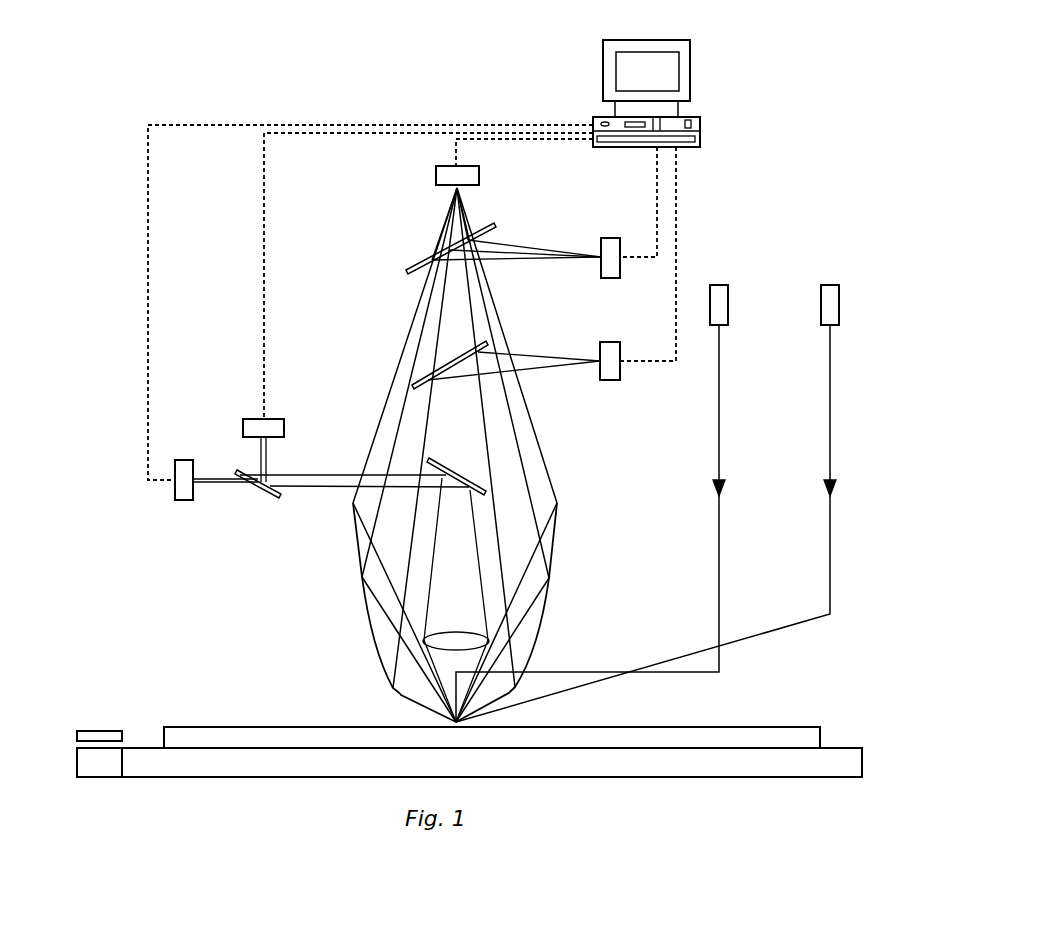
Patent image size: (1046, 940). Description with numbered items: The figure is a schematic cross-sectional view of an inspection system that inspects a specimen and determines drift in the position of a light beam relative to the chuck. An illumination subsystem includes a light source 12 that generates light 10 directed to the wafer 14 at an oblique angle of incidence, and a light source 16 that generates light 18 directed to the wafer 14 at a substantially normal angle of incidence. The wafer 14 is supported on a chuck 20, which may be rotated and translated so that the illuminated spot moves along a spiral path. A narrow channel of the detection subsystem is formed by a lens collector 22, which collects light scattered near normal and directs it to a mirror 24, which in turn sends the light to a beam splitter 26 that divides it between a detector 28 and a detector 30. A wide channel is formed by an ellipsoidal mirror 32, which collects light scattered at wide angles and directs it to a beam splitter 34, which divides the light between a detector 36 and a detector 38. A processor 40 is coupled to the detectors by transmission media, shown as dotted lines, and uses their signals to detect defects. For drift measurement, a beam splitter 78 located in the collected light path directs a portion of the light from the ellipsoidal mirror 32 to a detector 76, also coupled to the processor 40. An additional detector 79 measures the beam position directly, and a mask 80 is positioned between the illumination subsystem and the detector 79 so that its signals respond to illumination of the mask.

The light 10 is at (830, 440).
The light source 12 is at (839, 300).
The wafer 14 is at (818, 727).
The light source 16 is at (728, 300).
The light 18 is at (719, 440).
The chuck 20 is at (864, 770).
The lens collector 22 is at (440, 636).
The mirror 24 is at (440, 466).
The beam splitter 26 is at (268, 500).
The detector 28 is at (173, 500).
The detector 30 is at (285, 425).
The ellipsoidal mirror 32 is at (547, 620).
The beam splitter 34 is at (405, 270).
The detector 36 is at (480, 177).
The detector 38 is at (603, 240).
The processor 40 is at (700, 132).
The detector 76 is at (604, 342).
The beam splitter 78 is at (462, 352).
The additional detector 79 is at (77, 768).
The mask 80 is at (77, 733).